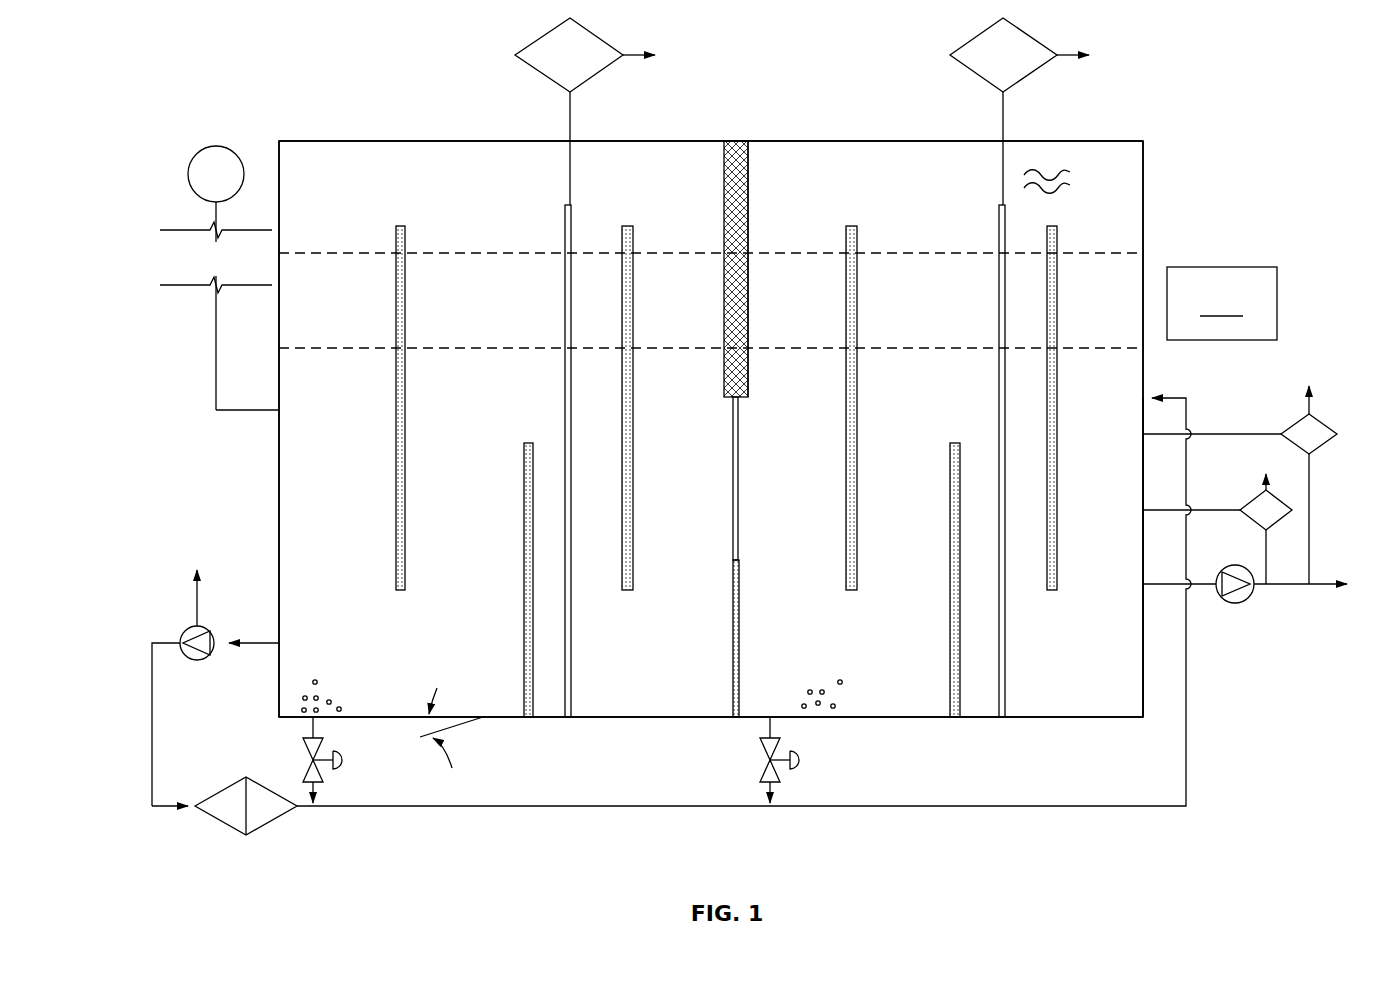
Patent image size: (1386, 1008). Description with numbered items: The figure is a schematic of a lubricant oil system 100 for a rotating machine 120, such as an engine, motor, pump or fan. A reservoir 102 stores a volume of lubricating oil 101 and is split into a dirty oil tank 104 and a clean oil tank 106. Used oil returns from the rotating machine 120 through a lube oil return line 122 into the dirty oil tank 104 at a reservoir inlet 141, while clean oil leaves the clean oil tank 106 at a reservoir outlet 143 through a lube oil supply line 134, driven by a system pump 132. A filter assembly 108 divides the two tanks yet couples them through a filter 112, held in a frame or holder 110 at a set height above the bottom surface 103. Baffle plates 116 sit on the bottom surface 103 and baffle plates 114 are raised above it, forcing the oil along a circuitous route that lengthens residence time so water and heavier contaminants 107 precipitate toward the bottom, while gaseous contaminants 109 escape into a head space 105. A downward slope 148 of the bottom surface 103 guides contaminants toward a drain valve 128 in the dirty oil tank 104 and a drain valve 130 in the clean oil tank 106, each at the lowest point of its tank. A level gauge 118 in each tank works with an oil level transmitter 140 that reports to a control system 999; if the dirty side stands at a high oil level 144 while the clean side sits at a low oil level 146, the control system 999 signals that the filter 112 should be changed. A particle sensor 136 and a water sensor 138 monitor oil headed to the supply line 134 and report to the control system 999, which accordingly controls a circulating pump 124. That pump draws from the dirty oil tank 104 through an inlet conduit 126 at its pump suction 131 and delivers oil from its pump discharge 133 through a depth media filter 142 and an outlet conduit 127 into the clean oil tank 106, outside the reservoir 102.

The lubricant oil system 100 is at (190, 42).
The lubricating oil 101 is at (1110, 393).
The reservoir 102 is at (800, 134).
The bottom surface 103 is at (925, 718).
The dirty oil tank 104 is at (359, 162).
The head space 105 is at (905, 150).
The clean oil tank 106 is at (1110, 213).
The contaminants 107 is at (296, 699).
The filter assembly 108 is at (752, 375).
The gaseous contaminants 109 is at (1045, 164).
The frame or holder 110 is at (722, 188).
The filter 112 is at (740, 485).
The baffle plates 114 is at (406, 490).
The baffle plates 116 is at (523, 582).
The level gauge 118 is at (572, 686).
The rotating machine 120 is at (190, 180).
The lube oil return line 122 is at (214, 345).
The circulating pump 124 is at (207, 660).
The inlet conduit 126 is at (268, 640).
The outlet conduit 127 is at (1137, 808).
The drain valve 128 is at (310, 758).
The drain valve 130 is at (765, 758).
The pump suction 131 is at (207, 629).
The system pump 132 is at (1237, 604).
The pump discharge 133 is at (183, 638).
The lube oil supply line 134 is at (1290, 590).
The particle sensor 136 is at (1282, 500).
The water sensor 138 is at (1297, 425).
The oil level transmitter 140 is at (546, 38).
The reservoir inlet 141 is at (277, 415).
The depth media filter 142 is at (270, 828).
The reservoir outlet 143 is at (1147, 590).
The high oil level 144 is at (467, 248).
The low oil level 146 is at (495, 352).
The downward slope 148 is at (424, 736).
The control system 999 is at (1222, 303).